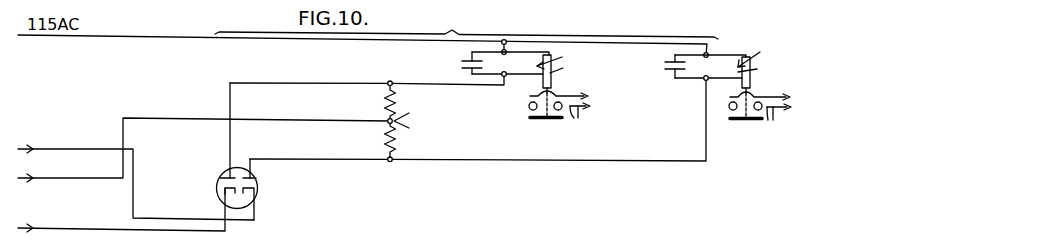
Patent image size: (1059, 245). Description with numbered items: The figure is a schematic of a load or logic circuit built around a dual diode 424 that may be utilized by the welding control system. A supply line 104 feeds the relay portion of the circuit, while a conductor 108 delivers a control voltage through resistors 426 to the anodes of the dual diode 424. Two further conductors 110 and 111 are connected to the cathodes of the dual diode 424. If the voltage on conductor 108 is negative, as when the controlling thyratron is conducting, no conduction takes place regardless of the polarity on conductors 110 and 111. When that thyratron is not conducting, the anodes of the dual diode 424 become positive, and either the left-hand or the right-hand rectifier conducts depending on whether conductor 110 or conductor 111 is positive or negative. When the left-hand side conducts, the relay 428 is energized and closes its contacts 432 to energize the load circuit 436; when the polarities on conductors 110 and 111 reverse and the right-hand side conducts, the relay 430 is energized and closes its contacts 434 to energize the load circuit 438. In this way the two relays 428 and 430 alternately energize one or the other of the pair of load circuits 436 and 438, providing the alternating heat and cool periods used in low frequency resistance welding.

The 115 V AC supply line 104 is at (368, 34).
The conductor 108 is at (92, 178).
The conductor 110 is at (89, 149).
The conductor 111 is at (83, 228).
The dual diode 424 is at (260, 188).
The resistors 426 is at (415, 121).
The relay 428 is at (563, 65).
The relay 430 is at (724, 61).
The contacts 432 is at (528, 106).
The contacts 434 is at (730, 110).
The load circuit 436 is at (580, 121).
The load circuit 438 is at (774, 125).